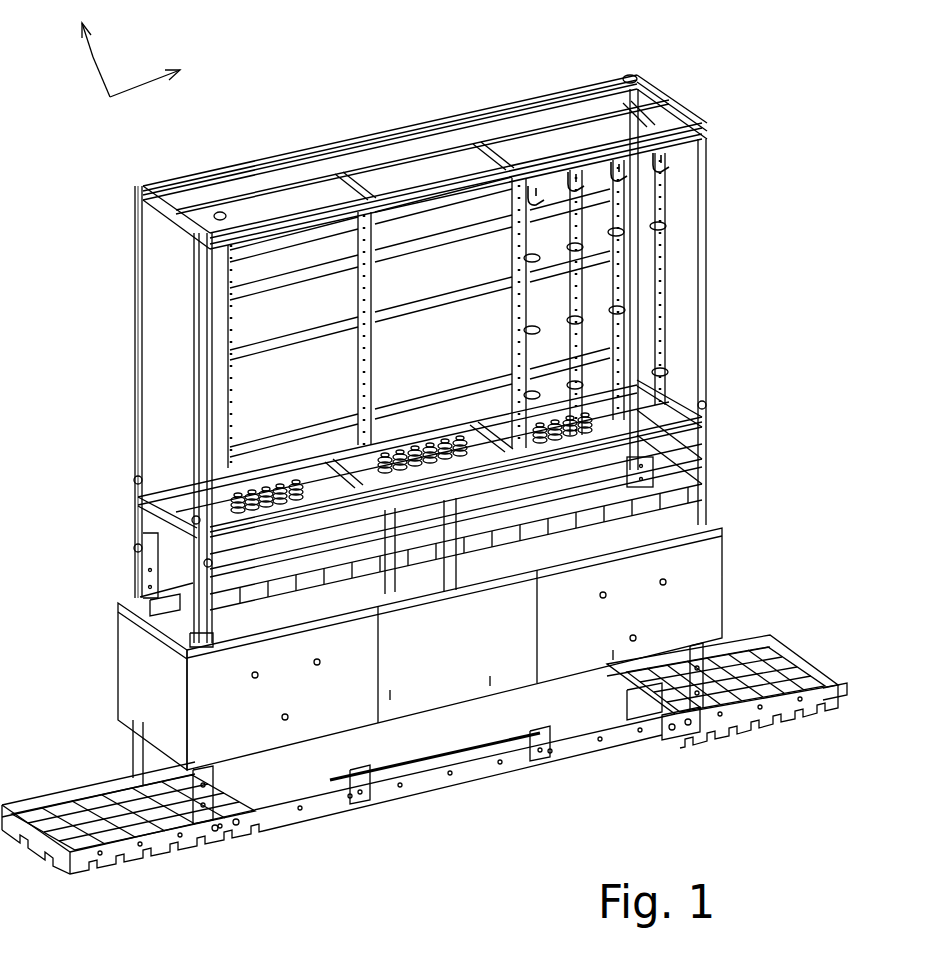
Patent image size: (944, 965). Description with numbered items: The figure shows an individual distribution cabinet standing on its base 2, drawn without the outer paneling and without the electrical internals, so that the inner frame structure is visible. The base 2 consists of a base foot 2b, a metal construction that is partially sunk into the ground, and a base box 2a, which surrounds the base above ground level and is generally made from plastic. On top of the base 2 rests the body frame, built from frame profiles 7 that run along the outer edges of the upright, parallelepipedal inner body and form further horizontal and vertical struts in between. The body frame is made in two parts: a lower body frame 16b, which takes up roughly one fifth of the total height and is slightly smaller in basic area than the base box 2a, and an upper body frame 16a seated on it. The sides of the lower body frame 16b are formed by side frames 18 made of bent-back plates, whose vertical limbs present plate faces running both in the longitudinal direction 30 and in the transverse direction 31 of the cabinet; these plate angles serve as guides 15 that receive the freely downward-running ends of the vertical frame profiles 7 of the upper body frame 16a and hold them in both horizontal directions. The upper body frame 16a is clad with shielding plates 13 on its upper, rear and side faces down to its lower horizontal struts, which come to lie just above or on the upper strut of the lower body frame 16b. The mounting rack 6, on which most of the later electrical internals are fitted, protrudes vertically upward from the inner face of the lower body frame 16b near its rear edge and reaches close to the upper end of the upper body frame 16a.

The base 2 is at (782, 630).
The base box 2a is at (454, 649).
The base foot 2b is at (627, 733).
The mounting rack 6 is at (420, 317).
The frame profiles 7 is at (422, 358).
The shielding plates 13 is at (747, 328).
The guides 15 is at (177, 582).
The upper body frame 16a is at (560, 93).
The lower body frame 16b is at (440, 556).
The side frames 18 is at (167, 612).
The longitudinal direction 30 is at (128, 88).
The transverse direction 31 is at (93, 57).